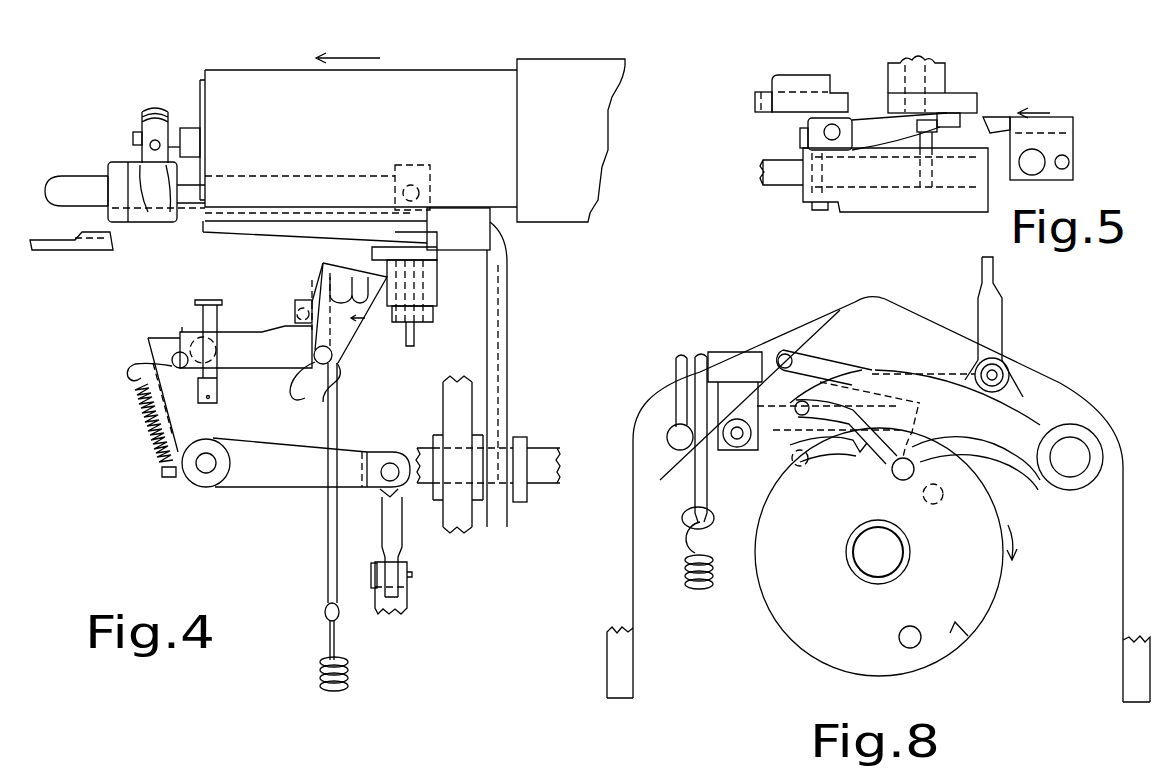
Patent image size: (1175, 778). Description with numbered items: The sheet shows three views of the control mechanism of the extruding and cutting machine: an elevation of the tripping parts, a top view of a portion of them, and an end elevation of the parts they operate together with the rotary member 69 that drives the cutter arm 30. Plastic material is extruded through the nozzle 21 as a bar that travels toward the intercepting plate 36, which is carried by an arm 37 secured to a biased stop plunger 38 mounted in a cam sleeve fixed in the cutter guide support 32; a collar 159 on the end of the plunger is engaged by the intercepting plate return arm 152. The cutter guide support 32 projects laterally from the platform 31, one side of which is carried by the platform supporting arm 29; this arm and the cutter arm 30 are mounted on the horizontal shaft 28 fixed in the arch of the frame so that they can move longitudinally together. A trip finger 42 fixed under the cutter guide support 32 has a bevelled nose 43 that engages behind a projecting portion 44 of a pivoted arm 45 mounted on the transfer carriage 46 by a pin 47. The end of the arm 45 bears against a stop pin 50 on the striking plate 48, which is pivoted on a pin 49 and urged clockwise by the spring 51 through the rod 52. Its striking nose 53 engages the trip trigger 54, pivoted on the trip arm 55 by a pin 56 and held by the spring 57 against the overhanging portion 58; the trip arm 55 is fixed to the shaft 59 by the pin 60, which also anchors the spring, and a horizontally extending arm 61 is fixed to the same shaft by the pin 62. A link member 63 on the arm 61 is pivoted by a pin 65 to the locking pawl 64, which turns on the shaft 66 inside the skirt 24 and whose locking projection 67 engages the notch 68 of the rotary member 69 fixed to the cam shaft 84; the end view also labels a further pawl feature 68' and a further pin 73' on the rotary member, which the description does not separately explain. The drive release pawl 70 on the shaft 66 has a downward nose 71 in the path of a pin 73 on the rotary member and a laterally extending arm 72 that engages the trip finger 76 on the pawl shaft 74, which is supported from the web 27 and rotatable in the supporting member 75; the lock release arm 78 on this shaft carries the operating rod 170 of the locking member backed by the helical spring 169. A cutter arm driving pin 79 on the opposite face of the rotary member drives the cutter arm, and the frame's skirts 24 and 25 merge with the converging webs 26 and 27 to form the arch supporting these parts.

In FIG. 4, the nozzle 21 is at (568, 76).
In FIG. 8, the skirt 24 is at (1123, 560).
In FIG. 8, the skirt 25 is at (633, 533).
In FIG. 8, the web 26 is at (1048, 377).
In FIG. 8, the web 27 is at (776, 343).
In FIG. 4, the shaft 28 is at (540, 458).
In FIG. 4, the platform supporting arm 29 is at (500, 370).
In FIG. 4, the cutter arm 30 is at (457, 418).
In FIG. 4, the platform 31 is at (442, 230).
In FIG. 8, the cutter guide support 32 is at (698, 362).
In FIG. 4, the intercepting plate 36 is at (200, 85).
In FIG. 4, the arm 37 is at (150, 168).
In FIG. 4, the stop plunger 38 is at (87, 190).
In FIG. 4, the trip finger 42 is at (348, 320).
In FIG. 5, the trip finger 42 is at (1068, 141).
In FIG. 4, the bevelled nose 43 is at (308, 303).
In FIG. 5, the bevelled nose 43 is at (990, 120).
In FIG. 4, the projecting portion 44 is at (293, 313).
In FIG. 5, the projecting portion 44 is at (950, 122).
In FIG. 4, the pivoted arm 45 is at (241, 340).
In FIG. 5, the pivoted arm 45 is at (875, 127).
In FIG. 5, the transfer carriage 46 is at (858, 200).
In FIG. 4, the pin 47 is at (210, 302).
In FIG. 5, the pin 47 is at (808, 137).
In FIG. 4, the striking plate 48 is at (330, 332).
In FIG. 5, the striking plate 48 is at (925, 98).
In FIG. 4, the pin 49 is at (296, 320).
In FIG. 5, the pin 49 is at (913, 60).
In FIG. 4, the stop pin 50 is at (318, 335).
In FIG. 5, the stop pin 50 is at (935, 125).
In FIG. 4, the spring 51 is at (318, 683).
In FIG. 8, the spring 51 is at (686, 583).
In FIG. 4, the rod 52 is at (325, 560).
In FIG. 4, the striking nose 53 is at (291, 392).
In FIG. 4, the trip trigger 54 is at (178, 358).
In FIG. 5, the trip trigger 54 is at (837, 100).
In FIG. 4, the trip arm 55 is at (170, 408).
In FIG. 4, the pin 56 is at (171, 358).
In FIG. 4, the spring 57 is at (157, 440).
In FIG. 4, the overhanging portion 58 is at (172, 335).
In FIG. 4, the shaft 59 is at (204, 468).
In FIG. 4, the pin 60 is at (174, 474).
In FIG. 4, the horizontally extending arm 61 is at (272, 470).
In FIG. 4, the pin 62 is at (207, 489).
In FIG. 4, the link member 63 is at (392, 531).
In FIG. 8, the link member 63 is at (990, 322).
In FIG. 4, the locking pawl 64 is at (400, 605).
In FIG. 8, the locking pawl 64 is at (828, 367).
In FIG. 4, the pin 65 is at (412, 576).
In FIG. 8, the pin 65 is at (972, 383).
In FIG. 8, the shaft 66 is at (1073, 455).
In FIG. 8, the locking projection 67 is at (918, 407).
In FIG. 8, the notch 68 is at (970, 650).
In FIG. 8, the pawl 68' is at (806, 479).
In FIG. 8, the rotary member 69 is at (970, 598).
In FIG. 8, the drive release pawl 70 is at (1033, 418).
In FIG. 8, the nose 71 is at (952, 456).
In FIG. 8, the laterally extending arm 72 is at (840, 393).
In FIG. 8, the pin 73 is at (967, 487).
In FIG. 8, the hole 73' is at (911, 666).
In FIG. 8, the pawl shaft 74 is at (735, 447).
In FIG. 8, the supporting member 75 is at (730, 397).
In FIG. 8, the trip finger 76 is at (792, 458).
In FIG. 8, the lock release arm 78 is at (700, 460).
In FIG. 8, the cutter arm driving pin 79 is at (945, 499).
In FIG. 8, the cam shaft 84 is at (870, 550).
In FIG. 4, the intercepting plate return arm 152 is at (44, 252).
In FIG. 4, the collar 159 is at (117, 178).
In FIG. 4, the helical spring 169 is at (428, 292).
In FIG. 4, the operating rod 170 is at (416, 335).
In FIG. 8, the operating rod 170 is at (676, 374).